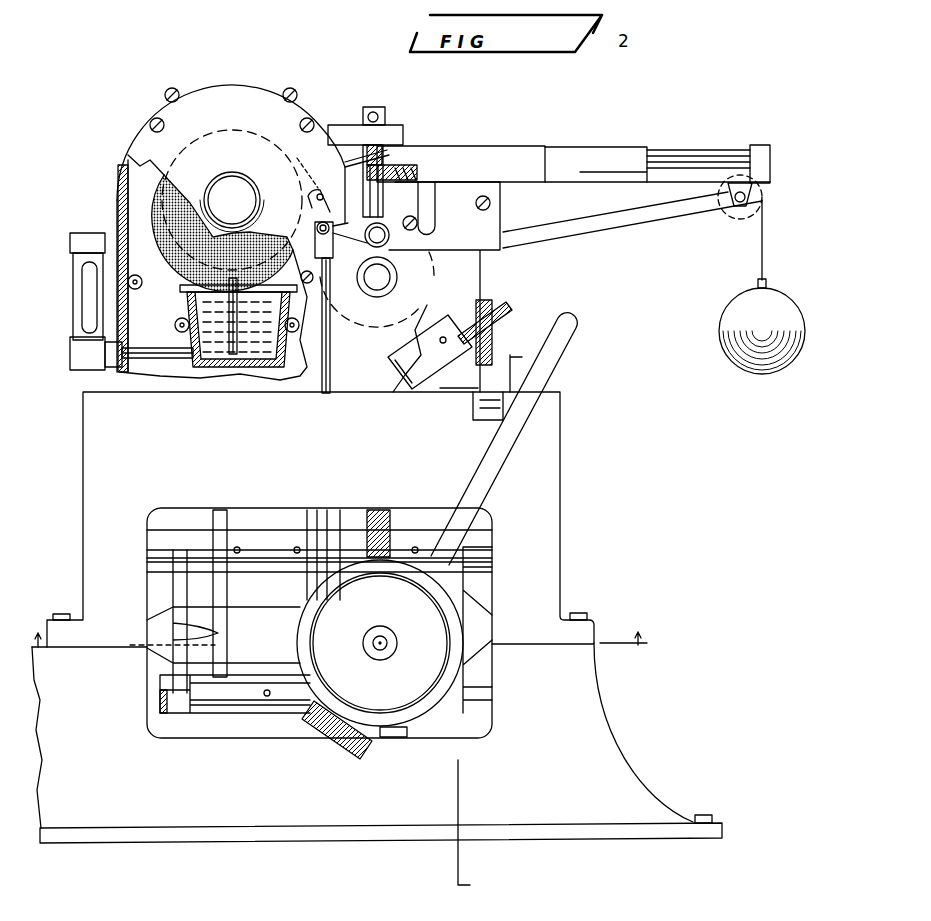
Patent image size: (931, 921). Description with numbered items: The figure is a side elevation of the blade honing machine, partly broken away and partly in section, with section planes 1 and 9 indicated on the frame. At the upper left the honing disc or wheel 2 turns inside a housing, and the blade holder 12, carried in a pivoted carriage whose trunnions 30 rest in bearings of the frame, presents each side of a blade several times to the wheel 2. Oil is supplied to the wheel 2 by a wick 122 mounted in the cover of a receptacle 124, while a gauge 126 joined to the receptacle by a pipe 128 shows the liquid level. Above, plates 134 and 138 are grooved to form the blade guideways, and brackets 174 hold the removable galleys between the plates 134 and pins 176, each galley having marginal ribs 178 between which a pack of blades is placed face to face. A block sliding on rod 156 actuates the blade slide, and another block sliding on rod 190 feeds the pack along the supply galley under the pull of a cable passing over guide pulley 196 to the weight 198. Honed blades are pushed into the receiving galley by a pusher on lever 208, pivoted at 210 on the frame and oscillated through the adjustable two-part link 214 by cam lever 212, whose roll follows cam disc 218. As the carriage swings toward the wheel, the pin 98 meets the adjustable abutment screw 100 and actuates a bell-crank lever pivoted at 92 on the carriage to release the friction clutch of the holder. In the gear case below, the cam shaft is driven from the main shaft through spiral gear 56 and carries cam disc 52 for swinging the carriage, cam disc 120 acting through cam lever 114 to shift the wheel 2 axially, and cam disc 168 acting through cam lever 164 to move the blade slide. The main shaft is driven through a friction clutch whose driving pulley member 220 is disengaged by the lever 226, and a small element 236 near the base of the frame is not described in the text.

The section line 1- 1 is at (494, 618).
The honing wheel 2 is at (178, 238).
The section line 9- 9 is at (338, 630).
The blade holder 12 is at (312, 194).
The trunnions 30 is at (377, 280).
The cam disc 52 is at (332, 512).
The spiral gear 56 is at (375, 512).
The pivot 92 is at (445, 337).
The pin 98 is at (440, 392).
The adjustable abutment screw 100 is at (512, 310).
The cam lever 114 is at (212, 713).
The cam disc 120 is at (220, 515).
The wick 122 is at (230, 354).
The receptacle 124 is at (262, 362).
The gauge 126 is at (78, 370).
The pipe 128 is at (150, 358).
The plate 134 is at (400, 125).
The plate 138 is at (352, 140).
The rod 156 is at (373, 112).
The cam lever 164 is at (447, 712).
The cam disc 168 is at (420, 515).
The brackets 174 is at (513, 170).
The pins 176 is at (664, 152).
The marginal ribs 178 is at (600, 148).
The rod 190 is at (705, 150).
The guide pulley 196 is at (752, 212).
The weight 198 is at (722, 310).
The lever 208 is at (343, 186).
The pivot 210 is at (385, 243).
The cam lever 212 is at (298, 713).
The two-part link 214 is at (332, 365).
The cam disc 218 is at (308, 518).
The driving clutch member 220 is at (407, 735).
The lever 226 is at (333, 745).
The stop 236 is at (497, 420).